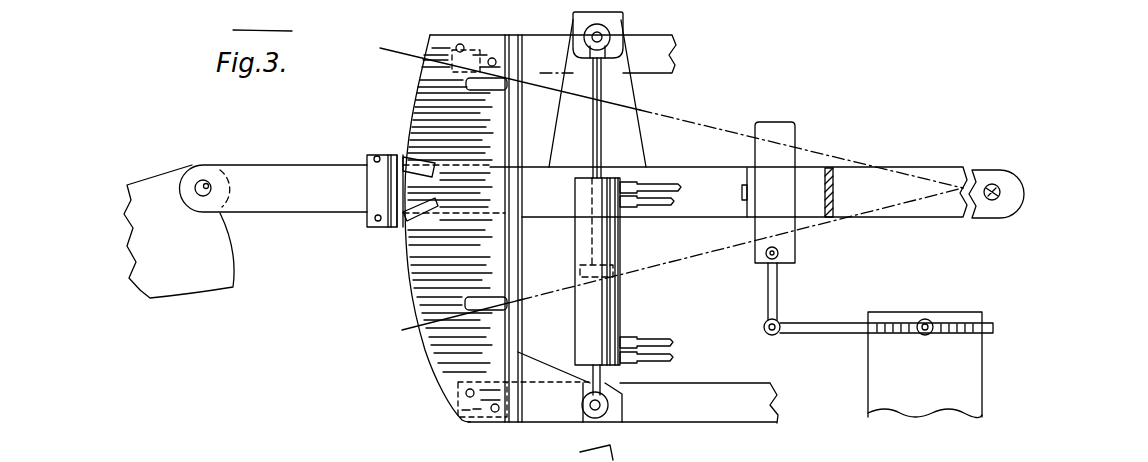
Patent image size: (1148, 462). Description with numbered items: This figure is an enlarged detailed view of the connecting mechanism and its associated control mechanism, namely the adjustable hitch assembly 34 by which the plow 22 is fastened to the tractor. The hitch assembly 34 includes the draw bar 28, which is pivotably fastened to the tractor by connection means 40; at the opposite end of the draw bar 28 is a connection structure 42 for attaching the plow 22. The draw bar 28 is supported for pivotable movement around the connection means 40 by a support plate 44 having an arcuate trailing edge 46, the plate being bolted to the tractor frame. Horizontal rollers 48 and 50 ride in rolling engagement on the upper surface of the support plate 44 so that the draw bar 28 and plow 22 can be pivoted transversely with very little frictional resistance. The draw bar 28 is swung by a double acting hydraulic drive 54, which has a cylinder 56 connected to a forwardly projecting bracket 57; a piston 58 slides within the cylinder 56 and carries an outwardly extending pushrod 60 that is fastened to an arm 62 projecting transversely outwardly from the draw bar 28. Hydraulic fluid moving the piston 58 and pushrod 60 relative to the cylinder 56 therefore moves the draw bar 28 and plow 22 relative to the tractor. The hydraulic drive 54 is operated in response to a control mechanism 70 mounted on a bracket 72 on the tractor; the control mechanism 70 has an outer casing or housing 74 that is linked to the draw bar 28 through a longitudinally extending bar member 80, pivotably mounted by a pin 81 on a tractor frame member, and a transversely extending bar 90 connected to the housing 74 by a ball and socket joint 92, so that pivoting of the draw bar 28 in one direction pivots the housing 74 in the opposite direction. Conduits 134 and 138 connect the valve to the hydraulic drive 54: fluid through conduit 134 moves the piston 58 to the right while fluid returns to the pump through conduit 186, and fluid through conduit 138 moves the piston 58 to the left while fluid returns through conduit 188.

The plow 22 is at (182, 280).
The draw bar 28 is at (285, 197).
The hitch assembly 34 is at (836, 90).
The connection means 40 is at (993, 183).
The connection structure 42 is at (205, 182).
The support plate 44 is at (420, 287).
The arcuate trailing edge 46 is at (420, 106).
The horizontal roller 48 is at (407, 152).
The horizontal roller 50 is at (407, 230).
The double acting hydraulic drive 54 is at (632, 317).
The cylinder 56 is at (575, 248).
The forwardly projecting bracket 57 is at (537, 413).
The piston 58 is at (613, 248).
The pushrod 60 is at (548, 86).
The arm 62 is at (617, 43).
The control mechanism 70 is at (803, 160).
The bracket 72 is at (810, 182).
The housing 74 is at (755, 235).
The bar member 80 is at (842, 335).
The pin 81 is at (927, 335).
The transversely extending bar 90 is at (780, 290).
The ball and socket joint 92 is at (795, 253).
The conduit 134 is at (667, 183).
The conduit 138 is at (672, 357).
The fluid conduit 186 is at (673, 345).
The conduit 188 is at (682, 197).